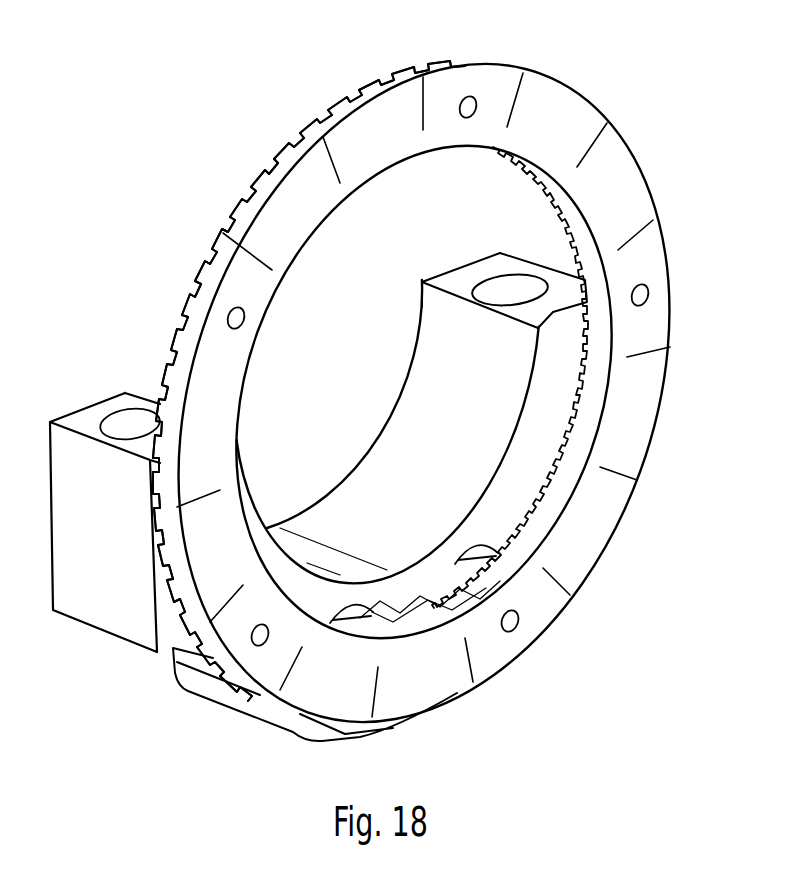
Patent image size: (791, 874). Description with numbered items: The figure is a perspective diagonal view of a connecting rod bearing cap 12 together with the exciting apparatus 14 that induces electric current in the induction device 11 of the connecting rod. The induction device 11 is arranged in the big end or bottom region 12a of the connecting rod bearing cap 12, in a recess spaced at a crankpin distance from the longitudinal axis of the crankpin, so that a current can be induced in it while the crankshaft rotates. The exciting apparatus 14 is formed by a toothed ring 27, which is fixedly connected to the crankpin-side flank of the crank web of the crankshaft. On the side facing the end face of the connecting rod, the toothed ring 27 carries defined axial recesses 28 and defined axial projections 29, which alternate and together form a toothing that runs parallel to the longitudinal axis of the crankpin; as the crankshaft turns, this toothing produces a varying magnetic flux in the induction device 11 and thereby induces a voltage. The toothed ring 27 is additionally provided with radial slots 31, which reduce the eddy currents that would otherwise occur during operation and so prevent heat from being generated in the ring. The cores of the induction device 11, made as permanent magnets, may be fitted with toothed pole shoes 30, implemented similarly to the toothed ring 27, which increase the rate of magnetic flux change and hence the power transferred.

The induction device 11 is at (415, 592).
The connecting rod bearing cap 12 is at (78, 608).
The bottom region of the connecting rod bearing cap 12a is at (268, 714).
The exciting apparatus 14 is at (593, 108).
The toothed ring 27 is at (635, 178).
The recess 28 is at (262, 172).
The projection 29 is at (278, 155).
The toothed pole shoe 30 is at (432, 598).
The radial slot 31 is at (570, 595).